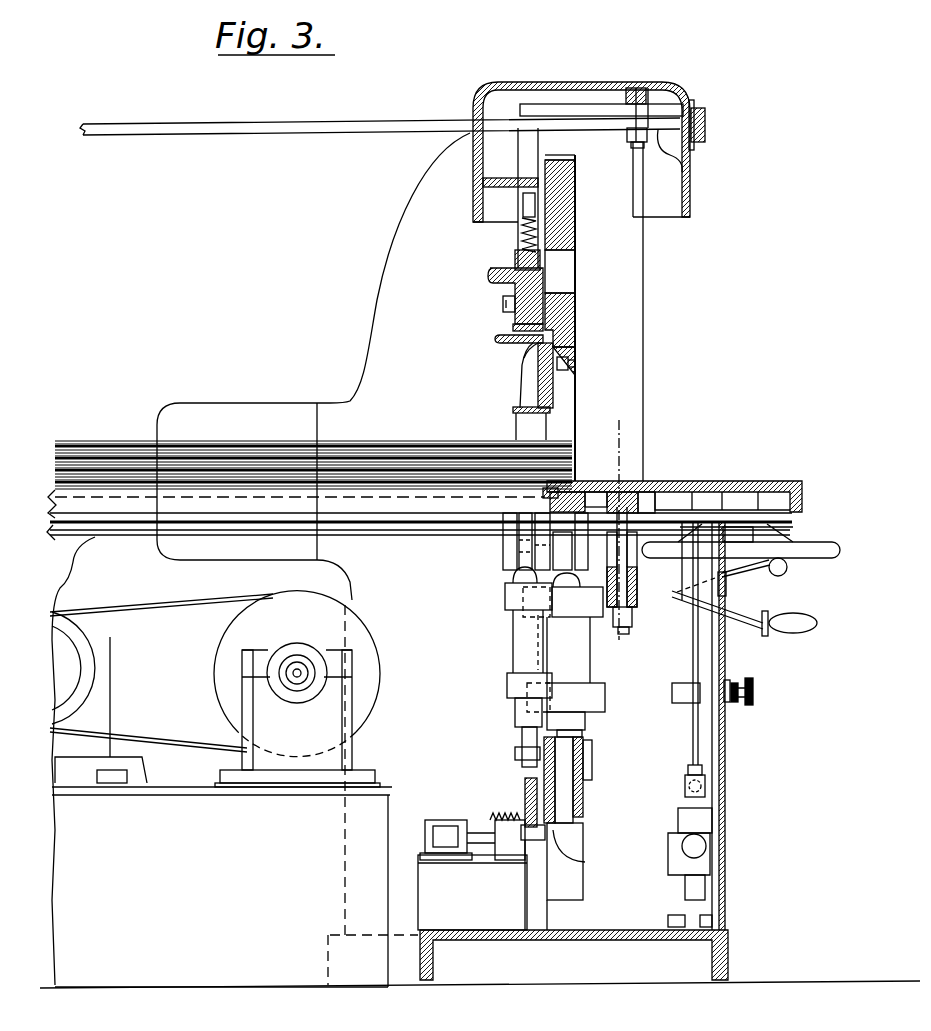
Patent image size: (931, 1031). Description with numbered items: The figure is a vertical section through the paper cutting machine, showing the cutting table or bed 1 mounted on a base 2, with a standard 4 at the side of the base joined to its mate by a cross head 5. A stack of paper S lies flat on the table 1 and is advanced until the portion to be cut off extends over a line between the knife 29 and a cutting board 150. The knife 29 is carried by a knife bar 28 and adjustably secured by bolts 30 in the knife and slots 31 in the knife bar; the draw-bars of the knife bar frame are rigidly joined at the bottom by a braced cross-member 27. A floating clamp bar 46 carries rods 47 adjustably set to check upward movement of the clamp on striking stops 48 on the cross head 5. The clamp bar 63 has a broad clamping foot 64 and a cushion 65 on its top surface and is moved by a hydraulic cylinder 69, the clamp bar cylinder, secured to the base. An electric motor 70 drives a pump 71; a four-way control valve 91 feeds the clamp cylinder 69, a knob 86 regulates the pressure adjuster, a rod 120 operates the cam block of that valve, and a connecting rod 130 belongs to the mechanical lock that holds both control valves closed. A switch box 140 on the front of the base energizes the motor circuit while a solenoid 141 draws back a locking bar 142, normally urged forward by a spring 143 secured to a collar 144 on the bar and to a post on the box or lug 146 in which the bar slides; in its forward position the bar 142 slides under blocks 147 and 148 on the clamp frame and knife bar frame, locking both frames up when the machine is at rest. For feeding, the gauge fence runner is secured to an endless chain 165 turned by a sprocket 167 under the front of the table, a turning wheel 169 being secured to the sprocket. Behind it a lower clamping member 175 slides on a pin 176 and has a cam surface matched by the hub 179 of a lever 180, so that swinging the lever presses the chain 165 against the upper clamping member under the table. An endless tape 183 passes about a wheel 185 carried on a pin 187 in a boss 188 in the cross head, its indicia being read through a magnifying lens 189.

The cross head 5 is at (549, 82).
The boss 188 is at (650, 98).
The pin 187 is at (622, 101).
The magnifying lens 189 is at (707, 127).
The wheel 185 is at (683, 173).
The stops 48 is at (500, 177).
The rods 47 is at (520, 228).
The floating clamp bar 46 is at (490, 281).
The cushion 65 is at (512, 326).
The clamp bar 63 is at (530, 358).
The clamping foot 64 is at (518, 407).
The knife bar 28 is at (575, 313).
The slots 31 is at (566, 353).
The bolts 30 is at (568, 364).
The knife 29 is at (553, 399).
The standard 4 is at (614, 691).
The endless tape 183 is at (218, 127).
The stack of paper S is at (147, 433).
The cutting table 1 is at (663, 483).
The endless chain 165 is at (364, 526).
The cutting board 150 is at (540, 495).
The electric motor 70 is at (96, 643).
The pump 71 is at (377, 681).
The hydraulic cylinder 69 is at (518, 660).
The lower clamping member 175 is at (712, 590).
The hub 179 is at (634, 604).
The pin 176 is at (628, 634).
The sprocket 167 is at (772, 520).
The turning wheel 169 is at (833, 557).
The rod 120 is at (765, 576).
The switch box 140 is at (710, 598).
The lever 180 is at (780, 631).
The four-way control valve 91 is at (693, 827).
The connecting rod 130 is at (680, 778).
The knob 86 is at (753, 702).
The block 147 is at (527, 778).
The braced cross-member 27 is at (578, 830).
The spring 143 is at (525, 817).
The locking bar 142 is at (548, 843).
The block 148 is at (553, 838).
The box 146 is at (510, 850).
The collar 144 is at (490, 820).
The solenoid 141 is at (427, 818).
The base 2 is at (730, 934).